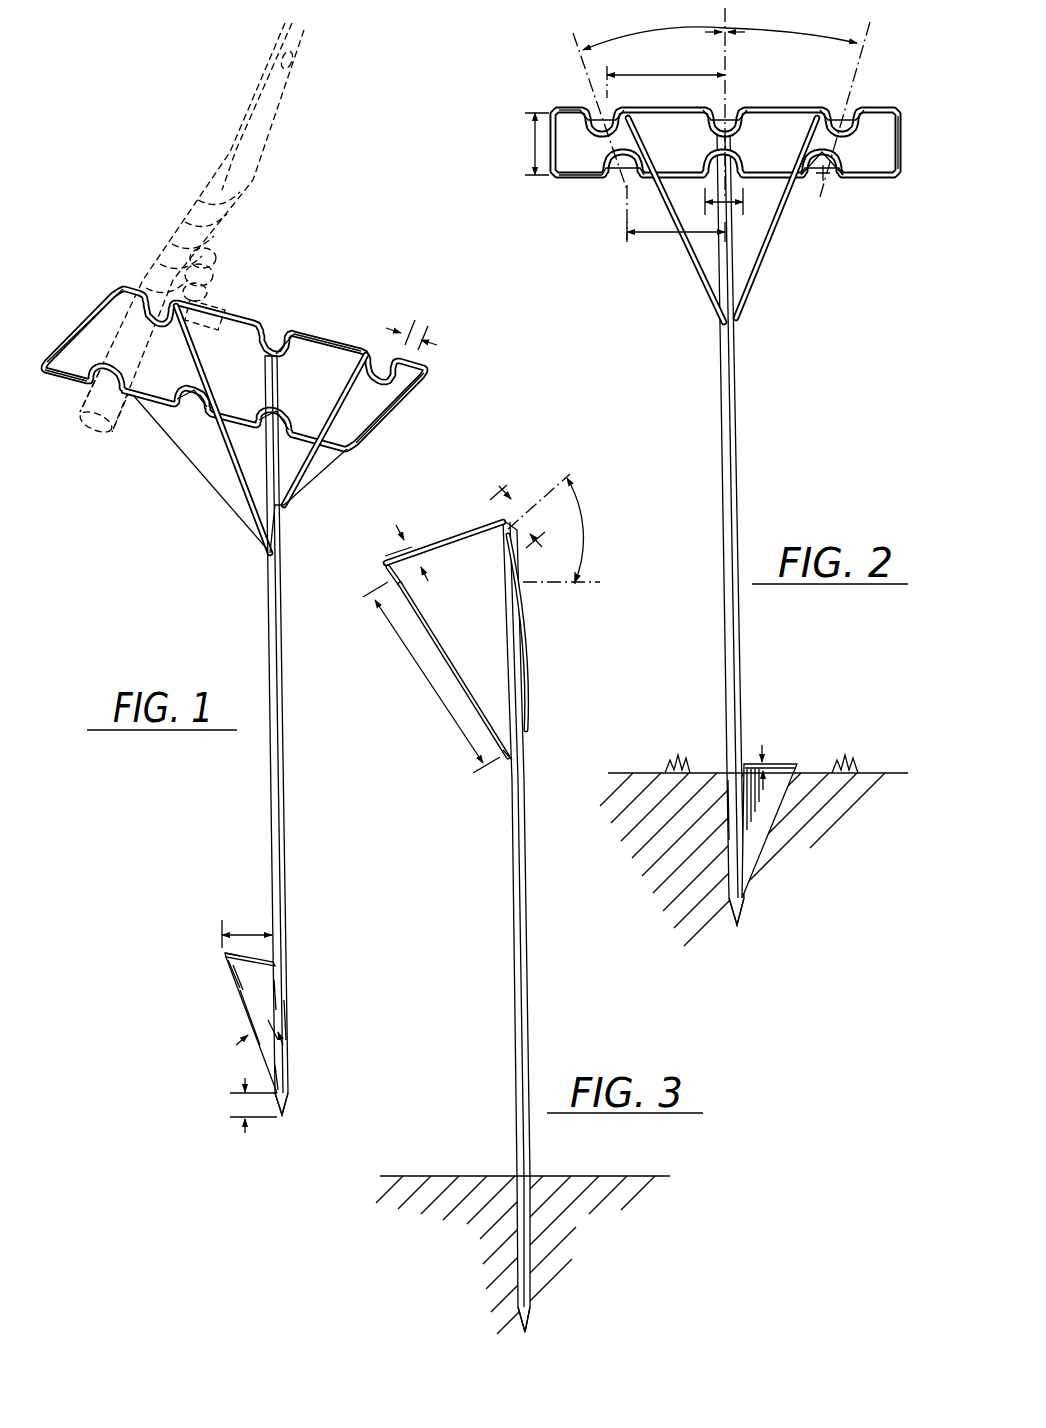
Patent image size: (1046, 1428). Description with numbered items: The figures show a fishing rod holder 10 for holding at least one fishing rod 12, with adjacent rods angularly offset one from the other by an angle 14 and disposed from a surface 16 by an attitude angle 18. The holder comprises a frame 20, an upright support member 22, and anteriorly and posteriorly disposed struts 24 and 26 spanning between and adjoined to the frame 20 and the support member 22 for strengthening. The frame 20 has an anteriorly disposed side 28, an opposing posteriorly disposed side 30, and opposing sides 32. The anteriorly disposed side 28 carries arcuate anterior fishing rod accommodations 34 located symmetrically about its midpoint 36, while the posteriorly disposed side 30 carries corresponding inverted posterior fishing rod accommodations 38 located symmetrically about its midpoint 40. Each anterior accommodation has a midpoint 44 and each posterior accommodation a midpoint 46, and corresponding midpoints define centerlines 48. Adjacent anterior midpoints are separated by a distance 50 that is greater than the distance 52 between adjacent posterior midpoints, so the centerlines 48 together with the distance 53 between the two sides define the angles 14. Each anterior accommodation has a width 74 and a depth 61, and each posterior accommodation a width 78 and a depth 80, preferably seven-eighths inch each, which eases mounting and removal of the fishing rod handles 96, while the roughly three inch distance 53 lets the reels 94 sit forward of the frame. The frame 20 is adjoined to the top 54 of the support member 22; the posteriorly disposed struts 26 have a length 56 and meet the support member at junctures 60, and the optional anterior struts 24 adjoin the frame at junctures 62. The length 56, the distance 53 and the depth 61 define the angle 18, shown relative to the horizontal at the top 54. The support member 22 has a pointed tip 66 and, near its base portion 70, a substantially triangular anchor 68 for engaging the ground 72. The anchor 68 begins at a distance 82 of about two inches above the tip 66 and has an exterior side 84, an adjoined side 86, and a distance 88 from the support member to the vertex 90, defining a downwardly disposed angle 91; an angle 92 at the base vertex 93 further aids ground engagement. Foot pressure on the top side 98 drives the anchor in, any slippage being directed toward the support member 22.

In FIG. 1, the fishing rod holder 10 is at (360, 280).
In FIG. 2, the fishing rod holder 10 is at (753, 402).
In FIG. 3, the fishing rod holder 10 is at (520, 462).
In FIG. 1, the fishing rod 12 is at (194, 188).
In FIG. 2, the angle 14 is at (653, 36).
In FIG. 2, the surface 16 is at (866, 772).
In FIG. 3, the surface 16 is at (484, 1174).
In FIG. 3, the angle 18 is at (580, 528).
In FIG. 1, the frame 20 is at (433, 371).
In FIG. 2, the frame 20 is at (864, 110).
In FIG. 3, the frame 20 is at (466, 526).
In FIG. 1, the support member 22 is at (285, 784).
In FIG. 2, the support member 22 is at (742, 496).
In FIG. 3, the support member 22 is at (524, 956).
In FIG. 1, the anteriorly disposed strut 24 is at (290, 508).
In FIG. 1, the posteriorly disposed strut 26 is at (222, 505).
In FIG. 2, the posteriorly disposed strut 26 is at (701, 308).
In FIG. 1, the anteriorly disposed side 28 is at (337, 336).
In FIG. 2, the anteriorly disposed side 28 is at (561, 113).
In FIG. 1, the posteriorly disposed side 30 is at (70, 385).
In FIG. 2, the posteriorly disposed side 30 is at (583, 178).
In FIG. 1, the opposing sides 32 is at (112, 305).
In FIG. 2, the opposing sides 32 is at (901, 178).
In FIG. 2, the anterior fishing rod accommodation 34 is at (596, 124).
In FIG. 1, the midpoint 36 is at (285, 338).
In FIG. 1, the inverted posterior fishing rod accommodation 38 is at (286, 440).
In FIG. 2, the inverted posterior fishing rod accommodation 38 is at (619, 177).
In FIG. 1, the midpoint 40 is at (189, 407).
In FIG. 2, the midpoint 44 is at (851, 105).
In FIG. 2, the midpoint 46 is at (824, 184).
In FIG. 2, the centerline 48 is at (584, 62).
In FIG. 2, the distance 50 is at (651, 72).
In FIG. 2, the distance 52 is at (657, 240).
In FIG. 2, the distance 53 is at (530, 141).
In FIG. 3, the top 54 is at (523, 552).
In FIG. 3, the length 56 is at (420, 666).
In FIG. 3, the juncture 60 is at (505, 760).
In FIG. 3, the depth 61 is at (522, 514).
In FIG. 3, the juncture 62 is at (506, 546).
In FIG. 1, the pointed tip 66 is at (284, 1110).
In FIG. 2, the pointed tip 66 is at (741, 908).
In FIG. 3, the pointed tip 66 is at (530, 1315).
In FIG. 1, the triangular shaped anchor 68 is at (222, 968).
In FIG. 2, the triangular shaped anchor 68 is at (790, 763).
In FIG. 1, the base portion 70 is at (286, 1012).
In FIG. 2, the base portion 70 is at (728, 815).
In FIG. 2, the ground 72 is at (858, 817).
In FIG. 3, the ground 72 is at (593, 1196).
In FIG. 1, the width 74 is at (414, 328).
In FIG. 2, the width 78 is at (736, 210).
In FIG. 3, the depth 80 is at (383, 562).
In FIG. 1, the distance 82 is at (232, 1106).
In FIG. 1, the exterior side 84 is at (244, 1003).
In FIG. 1, the adjoined side 86 is at (273, 993).
In FIG. 1, the distance 88 is at (245, 928).
In FIG. 1, the vertex 90 is at (223, 950).
In FIG. 2, the downwardly disposed angle 91 is at (765, 760).
In FIG. 1, the angle 92 is at (282, 1042).
In FIG. 1, the base vertex 93 is at (279, 1070).
In FIG. 1, the reel 94 is at (226, 282).
In FIG. 1, the fishing rod handle 96 is at (106, 440).
In FIG. 1, the top side 98 is at (238, 978).